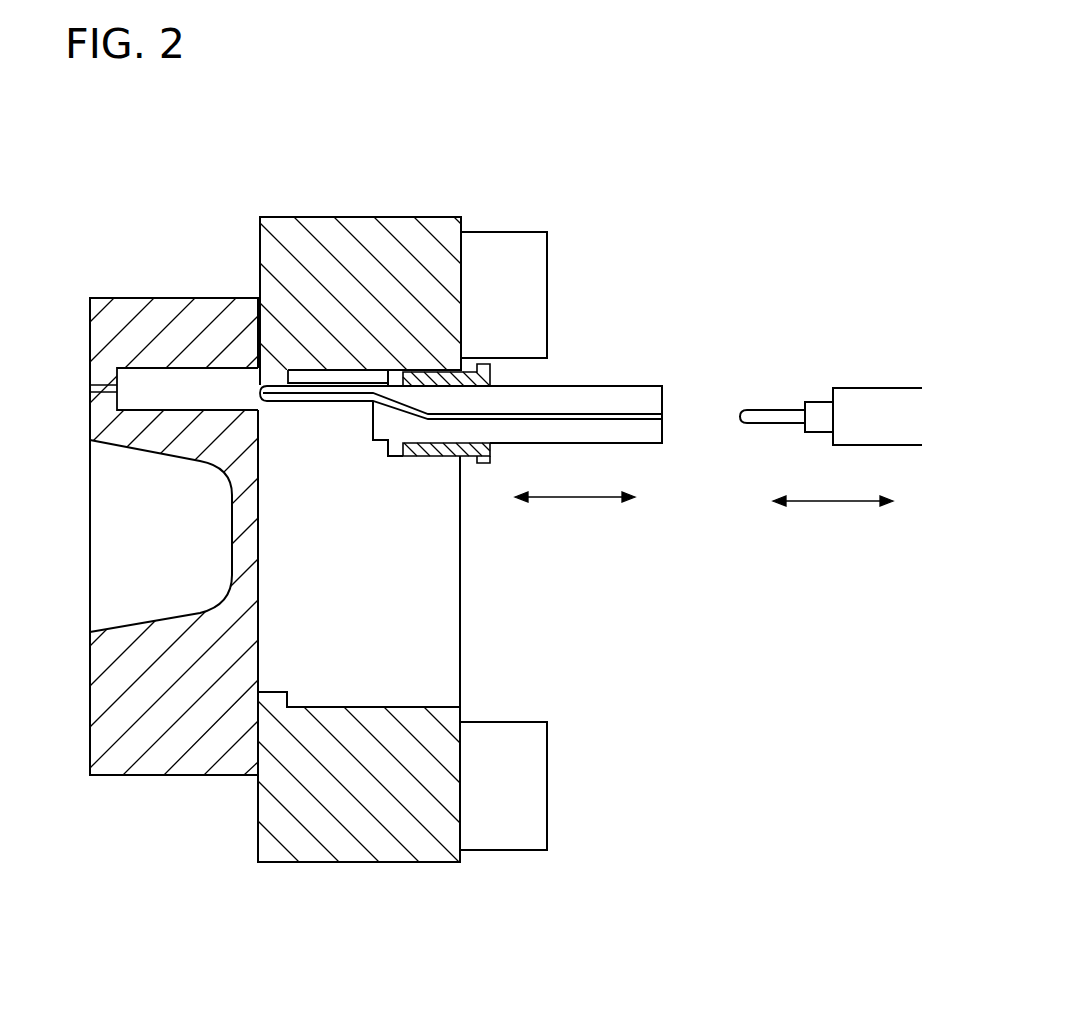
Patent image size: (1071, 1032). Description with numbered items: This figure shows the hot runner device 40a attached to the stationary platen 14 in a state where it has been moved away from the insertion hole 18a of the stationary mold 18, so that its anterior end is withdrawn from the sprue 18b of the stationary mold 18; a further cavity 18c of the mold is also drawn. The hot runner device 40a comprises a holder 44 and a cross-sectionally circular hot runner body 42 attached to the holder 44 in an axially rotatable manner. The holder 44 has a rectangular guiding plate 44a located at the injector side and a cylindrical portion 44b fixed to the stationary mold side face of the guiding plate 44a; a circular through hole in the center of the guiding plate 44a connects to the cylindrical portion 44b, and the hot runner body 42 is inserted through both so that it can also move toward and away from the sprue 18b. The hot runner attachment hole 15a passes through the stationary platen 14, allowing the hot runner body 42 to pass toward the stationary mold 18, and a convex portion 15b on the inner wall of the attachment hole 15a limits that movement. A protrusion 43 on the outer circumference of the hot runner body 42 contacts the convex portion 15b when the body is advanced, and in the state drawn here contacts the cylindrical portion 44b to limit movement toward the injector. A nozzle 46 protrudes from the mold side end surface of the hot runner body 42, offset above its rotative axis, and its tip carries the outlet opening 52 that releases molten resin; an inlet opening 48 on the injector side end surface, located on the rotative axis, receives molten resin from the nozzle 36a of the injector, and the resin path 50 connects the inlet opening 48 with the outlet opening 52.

The stationary platen 14 is at (430, 217).
The stationary mold 18 is at (212, 298).
The insertion hole 18a is at (150, 388).
The sprue 18b is at (103, 397).
The cavity 18c is at (142, 452).
The hot runner attachment hole 15a is at (388, 707).
The convex portion 15b is at (310, 372).
The protrusion 43 is at (366, 372).
The holder 44 is at (487, 461).
The guiding plate 44a is at (492, 458).
The cylindrical portion 44b is at (430, 456).
The hot runner body 42 is at (643, 447).
The nozzle 46 is at (350, 413).
The inlet opening 48 is at (664, 414).
The resin path 50 is at (582, 411).
The outlet opening 52 is at (260, 410).
The hot runner device 40a is at (631, 378).
The nozzle of the injector 36a is at (778, 409).